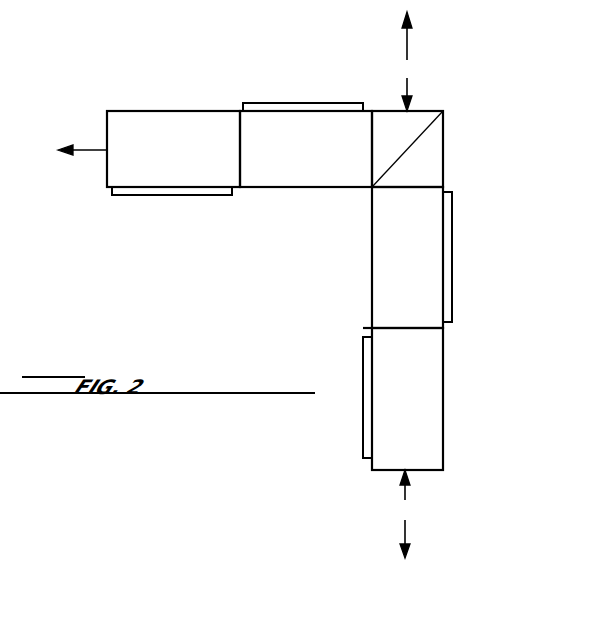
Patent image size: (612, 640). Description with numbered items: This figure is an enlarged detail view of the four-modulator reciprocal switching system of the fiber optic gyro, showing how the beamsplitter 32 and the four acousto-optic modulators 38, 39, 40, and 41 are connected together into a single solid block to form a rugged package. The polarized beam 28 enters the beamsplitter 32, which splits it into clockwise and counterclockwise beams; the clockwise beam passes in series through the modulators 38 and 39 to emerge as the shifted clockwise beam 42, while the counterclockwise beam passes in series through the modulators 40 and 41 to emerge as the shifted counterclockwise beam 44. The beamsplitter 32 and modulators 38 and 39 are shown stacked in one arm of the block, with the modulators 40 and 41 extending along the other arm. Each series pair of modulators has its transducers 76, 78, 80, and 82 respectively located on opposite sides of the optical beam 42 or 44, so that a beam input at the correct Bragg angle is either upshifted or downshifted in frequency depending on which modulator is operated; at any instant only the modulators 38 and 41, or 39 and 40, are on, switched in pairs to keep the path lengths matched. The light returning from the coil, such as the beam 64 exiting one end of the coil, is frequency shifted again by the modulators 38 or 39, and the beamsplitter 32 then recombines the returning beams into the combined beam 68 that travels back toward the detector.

The beam 28 is at (407, 85).
The beamsplitter 32 is at (445, 146).
The acousto-optic modulator 38 is at (372, 283).
The acousto-optic modulator 39 is at (445, 388).
The acousto-optic modulator 40 is at (310, 187).
The acousto-optic modulator 41 is at (160, 111).
The shifted clockwise beam 42 is at (406, 533).
The shifted counterclockwise beam 44 is at (92, 150).
The beam 64 is at (406, 492).
The combined beam 68 is at (407, 36).
The transducer 76 is at (452, 290).
The transducer 78 is at (365, 432).
The transducer 80 is at (312, 103).
The transducer 82 is at (165, 196).